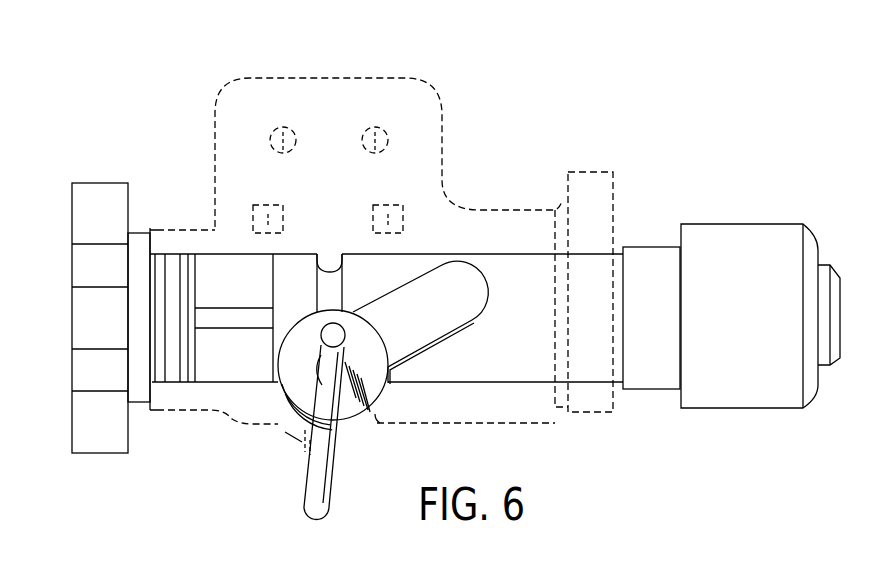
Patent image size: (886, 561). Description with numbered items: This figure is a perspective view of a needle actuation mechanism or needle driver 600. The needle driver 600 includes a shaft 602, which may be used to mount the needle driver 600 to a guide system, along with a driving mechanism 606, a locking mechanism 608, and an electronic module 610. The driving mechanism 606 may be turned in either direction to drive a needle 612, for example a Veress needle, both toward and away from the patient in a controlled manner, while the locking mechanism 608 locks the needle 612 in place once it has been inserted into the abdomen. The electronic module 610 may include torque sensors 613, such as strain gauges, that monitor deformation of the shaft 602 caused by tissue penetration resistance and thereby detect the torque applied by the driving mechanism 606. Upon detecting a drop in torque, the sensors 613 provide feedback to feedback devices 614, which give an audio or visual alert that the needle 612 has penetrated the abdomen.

The needle driver 600 is at (160, 121).
The shaft 602 is at (507, 352).
The driving mechanism 606 is at (87, 323).
The locking mechanism 608 is at (450, 297).
The electronic module 610 is at (333, 105).
The needle 612 is at (317, 501).
The torque sensors 613 is at (388, 220).
The feedback devices 614 is at (290, 150).